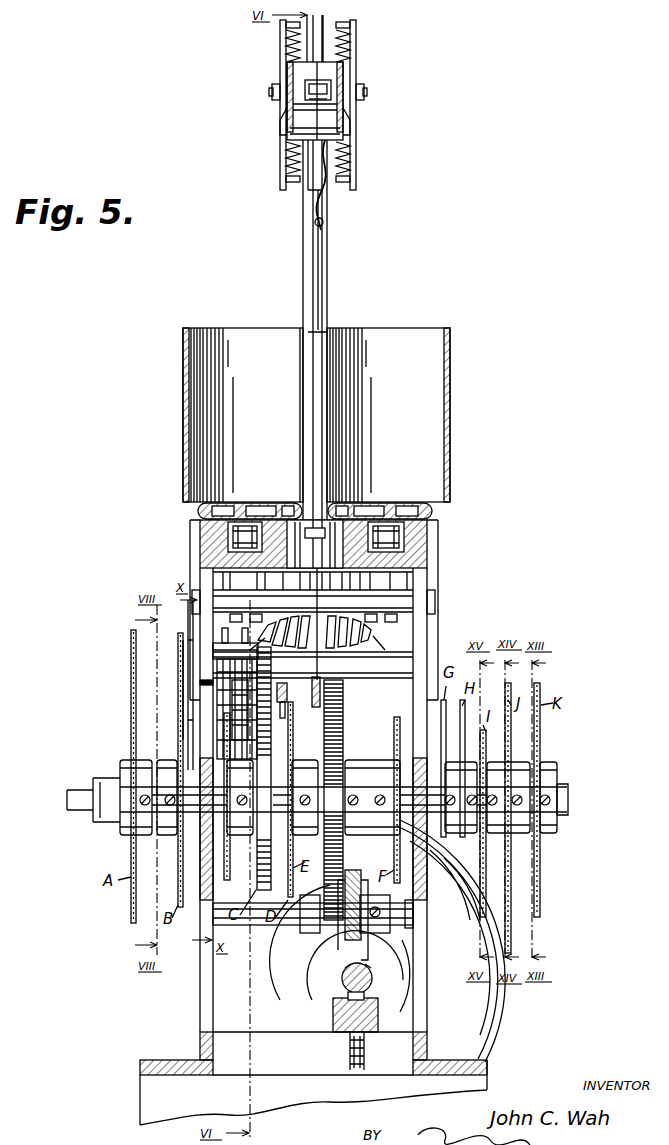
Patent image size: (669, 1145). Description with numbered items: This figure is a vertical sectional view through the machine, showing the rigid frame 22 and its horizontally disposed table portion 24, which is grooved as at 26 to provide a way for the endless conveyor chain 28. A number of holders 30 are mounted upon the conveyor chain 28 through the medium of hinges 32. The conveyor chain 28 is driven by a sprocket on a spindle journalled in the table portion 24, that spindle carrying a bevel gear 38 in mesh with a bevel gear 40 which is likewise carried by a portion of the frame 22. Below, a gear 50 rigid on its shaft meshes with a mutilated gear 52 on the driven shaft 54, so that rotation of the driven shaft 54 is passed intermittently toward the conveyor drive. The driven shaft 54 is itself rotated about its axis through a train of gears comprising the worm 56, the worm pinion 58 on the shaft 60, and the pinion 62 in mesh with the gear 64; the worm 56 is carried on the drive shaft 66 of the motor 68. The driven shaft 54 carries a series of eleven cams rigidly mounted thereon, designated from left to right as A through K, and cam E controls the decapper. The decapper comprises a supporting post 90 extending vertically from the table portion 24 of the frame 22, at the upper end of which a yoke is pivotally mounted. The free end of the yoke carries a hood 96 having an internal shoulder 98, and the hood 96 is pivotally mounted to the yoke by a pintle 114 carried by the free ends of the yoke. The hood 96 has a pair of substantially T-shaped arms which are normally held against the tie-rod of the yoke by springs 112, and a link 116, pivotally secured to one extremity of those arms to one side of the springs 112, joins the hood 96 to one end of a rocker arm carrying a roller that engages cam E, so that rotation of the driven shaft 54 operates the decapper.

The rigid frame 22 is at (450, 586).
The table portion 24 is at (427, 552).
The groove 26 is at (404, 534).
The endless conveyor chain 28 is at (228, 538).
The holders 30 is at (183, 410).
The hinges 32 is at (222, 503).
The bevel gear 38 is at (313, 632).
The bevel gear 40 is at (287, 690).
The gear 50 is at (240, 750).
The mutilated gear 52 is at (258, 668).
The driven shaft 54 is at (67, 800).
The worm 56 is at (342, 980).
The worm pinion 58 is at (336, 950).
The shaft 60 is at (427, 915).
The pinion 62 is at (345, 930).
The gear 64 is at (343, 706).
The drive shaft 66 is at (350, 990).
The motor 68 is at (495, 1030).
The supporting post 90 is at (325, 220).
The hood 96 is at (343, 64).
The internal shoulder 98 is at (305, 92).
The springs 112 is at (286, 48).
The pintle 114 is at (364, 92).
The link 116 is at (316, 258).